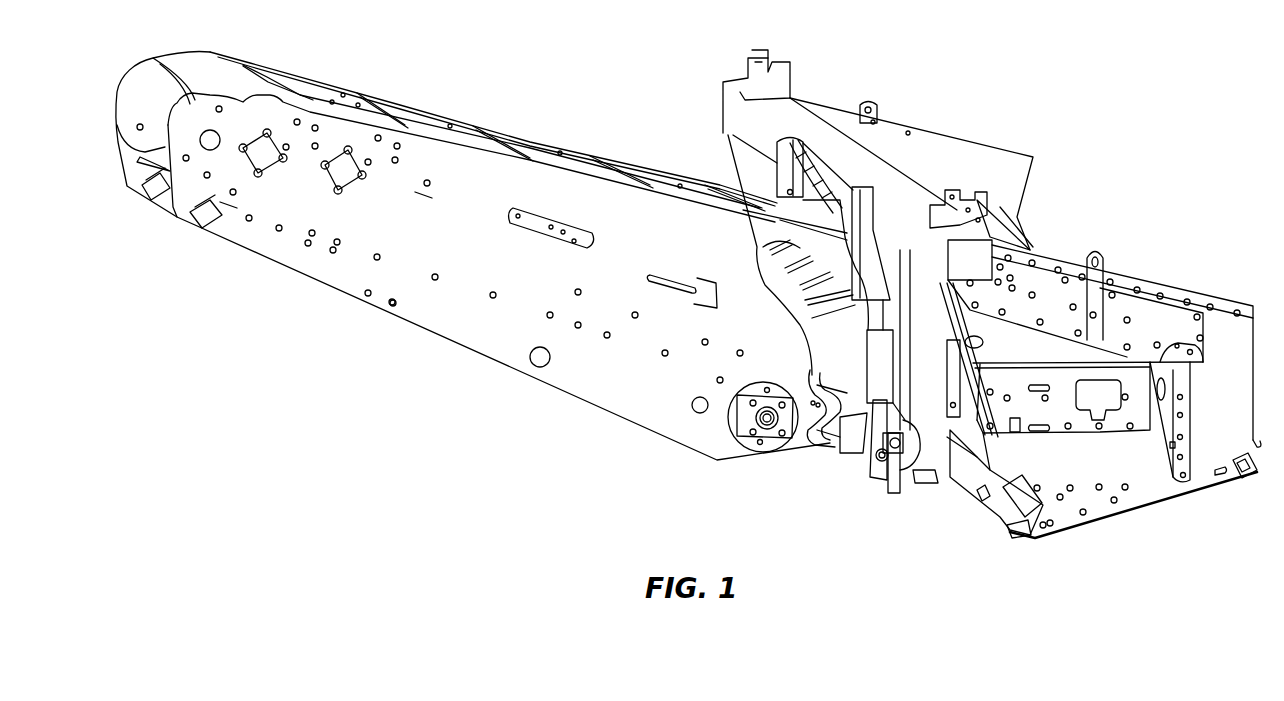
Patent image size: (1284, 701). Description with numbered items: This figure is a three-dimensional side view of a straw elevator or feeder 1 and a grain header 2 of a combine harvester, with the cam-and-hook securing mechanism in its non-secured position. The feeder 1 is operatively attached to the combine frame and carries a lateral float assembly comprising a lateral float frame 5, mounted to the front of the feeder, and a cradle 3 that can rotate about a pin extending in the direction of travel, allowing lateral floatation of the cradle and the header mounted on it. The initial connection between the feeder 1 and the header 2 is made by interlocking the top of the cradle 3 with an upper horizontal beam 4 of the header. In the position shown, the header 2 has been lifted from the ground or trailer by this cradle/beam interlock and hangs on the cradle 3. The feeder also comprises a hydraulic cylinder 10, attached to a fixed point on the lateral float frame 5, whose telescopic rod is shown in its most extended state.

The feeder 1 is at (460, 318).
The grain header 2 is at (1137, 470).
The cradle 3 is at (830, 185).
The upper horizontal beam 4 is at (910, 200).
The lateral float frame 5 is at (735, 178).
The hydraulic cylinder 10 is at (870, 450).